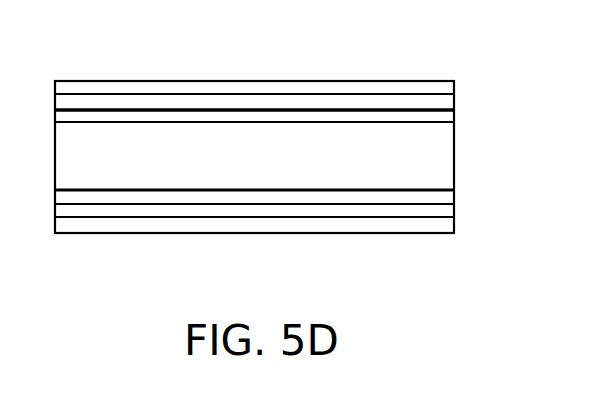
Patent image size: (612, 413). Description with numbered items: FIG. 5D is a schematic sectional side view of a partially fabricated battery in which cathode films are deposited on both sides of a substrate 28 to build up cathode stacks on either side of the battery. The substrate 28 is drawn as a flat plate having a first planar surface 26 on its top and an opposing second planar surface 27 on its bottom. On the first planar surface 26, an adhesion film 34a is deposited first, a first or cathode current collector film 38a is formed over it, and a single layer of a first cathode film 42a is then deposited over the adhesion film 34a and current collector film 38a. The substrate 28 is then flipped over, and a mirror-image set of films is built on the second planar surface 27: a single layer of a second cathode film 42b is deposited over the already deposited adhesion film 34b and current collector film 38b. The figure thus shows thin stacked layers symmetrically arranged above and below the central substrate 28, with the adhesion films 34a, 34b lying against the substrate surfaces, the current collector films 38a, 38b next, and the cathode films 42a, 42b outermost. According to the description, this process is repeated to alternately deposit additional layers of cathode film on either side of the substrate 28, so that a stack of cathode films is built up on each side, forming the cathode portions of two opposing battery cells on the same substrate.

The substrate 28 is at (263, 176).
The first planar surface 26 is at (409, 122).
The second planar surface 27 is at (405, 190).
The adhesion film 34a is at (303, 110).
The adhesion film 34b is at (310, 204).
The cathode current collector film 38a is at (170, 94).
The cathode current collector film 38b is at (210, 217).
The first cathode film 42a is at (75, 81).
The second cathode film 42b is at (98, 233).